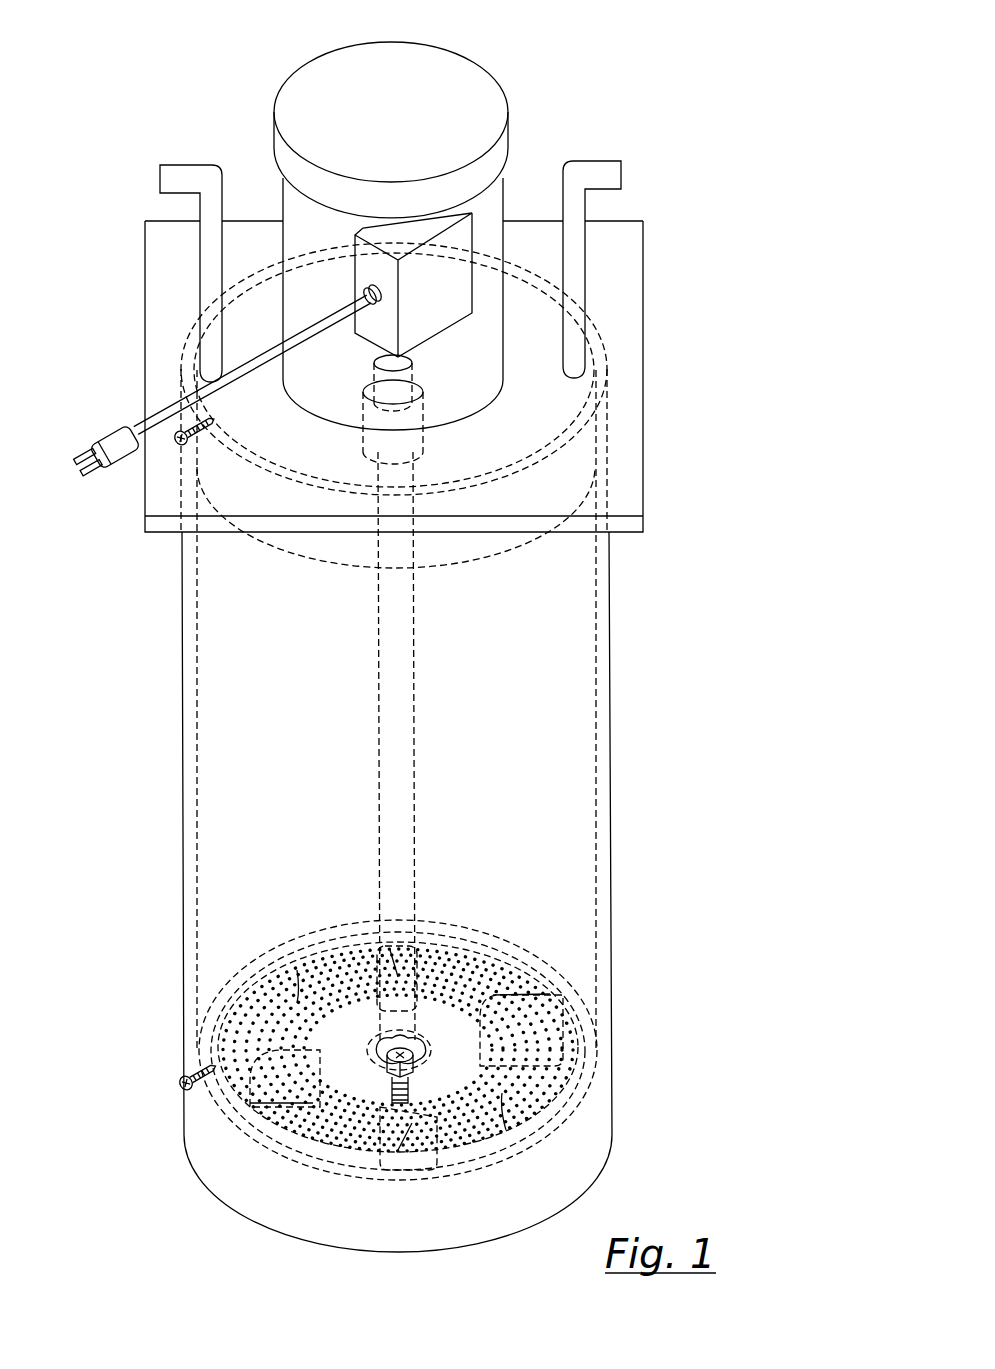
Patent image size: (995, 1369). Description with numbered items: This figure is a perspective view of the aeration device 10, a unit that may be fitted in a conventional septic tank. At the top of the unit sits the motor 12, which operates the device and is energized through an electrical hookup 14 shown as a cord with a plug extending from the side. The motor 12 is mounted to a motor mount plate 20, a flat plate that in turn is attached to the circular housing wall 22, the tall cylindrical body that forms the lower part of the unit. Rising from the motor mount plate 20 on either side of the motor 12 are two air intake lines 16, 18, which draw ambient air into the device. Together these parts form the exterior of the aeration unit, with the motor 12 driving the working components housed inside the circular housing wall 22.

The aeration device 10 is at (663, 607).
The motor 12 is at (470, 90).
The electrical hookup 14 is at (113, 428).
The air intake line 16 is at (603, 170).
The air intake line 18 is at (170, 173).
The motor mount plate 20 is at (155, 252).
The circular housing wall 22 is at (612, 772).